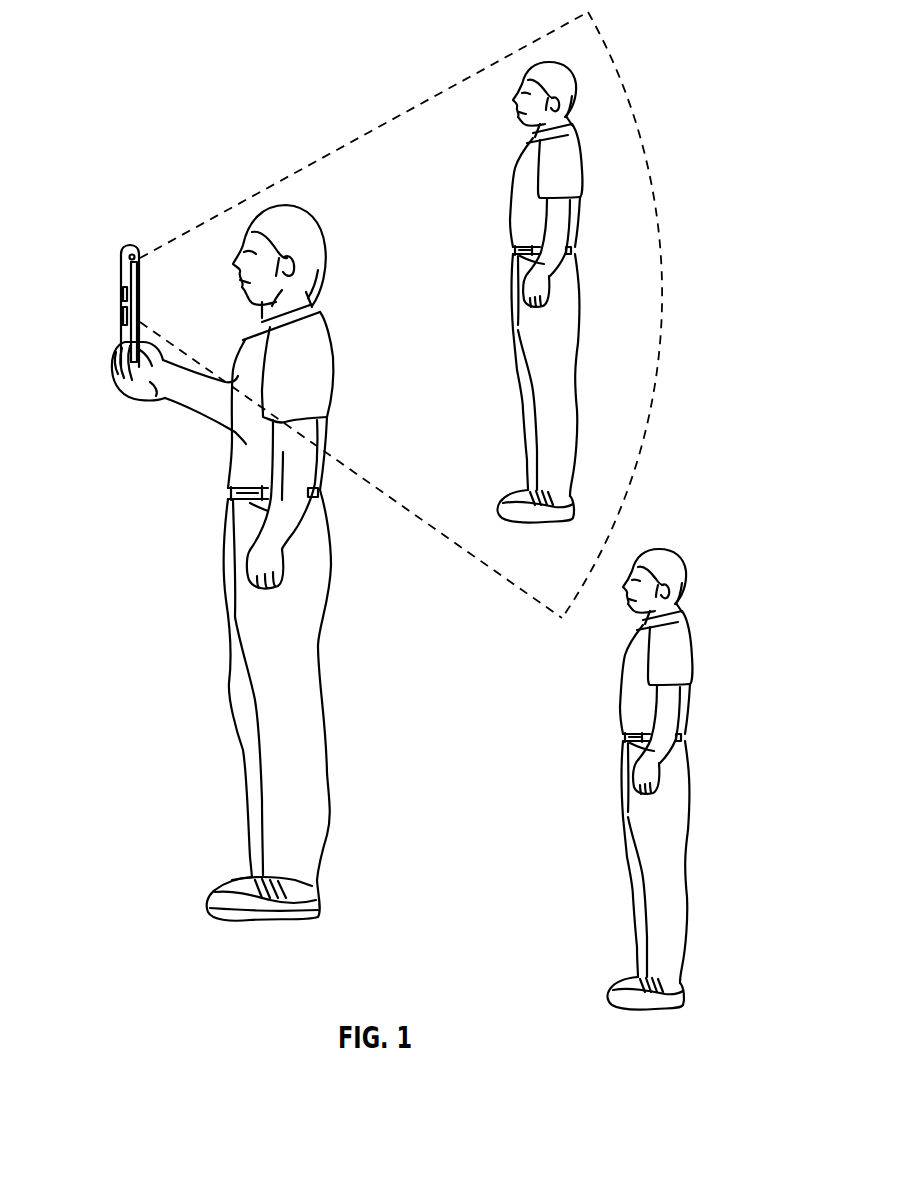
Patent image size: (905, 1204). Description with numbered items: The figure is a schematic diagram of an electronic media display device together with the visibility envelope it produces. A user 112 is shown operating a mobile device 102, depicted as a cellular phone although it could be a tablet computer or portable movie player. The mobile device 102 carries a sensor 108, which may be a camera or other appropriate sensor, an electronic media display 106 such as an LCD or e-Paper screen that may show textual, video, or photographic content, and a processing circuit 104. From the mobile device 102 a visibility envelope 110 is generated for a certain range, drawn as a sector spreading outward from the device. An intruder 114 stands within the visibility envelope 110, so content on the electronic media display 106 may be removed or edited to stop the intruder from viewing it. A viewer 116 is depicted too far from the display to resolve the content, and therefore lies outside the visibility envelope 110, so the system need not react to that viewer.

The mobile device 102 is at (120, 333).
The processing circuit 104 is at (123, 318).
The electronic media display 106 is at (126, 280).
The sensor 108 is at (141, 257).
The visibility envelope 110 is at (400, 117).
The user 112 is at (325, 244).
The intruder 114 is at (589, 164).
The viewer 116 is at (704, 673).